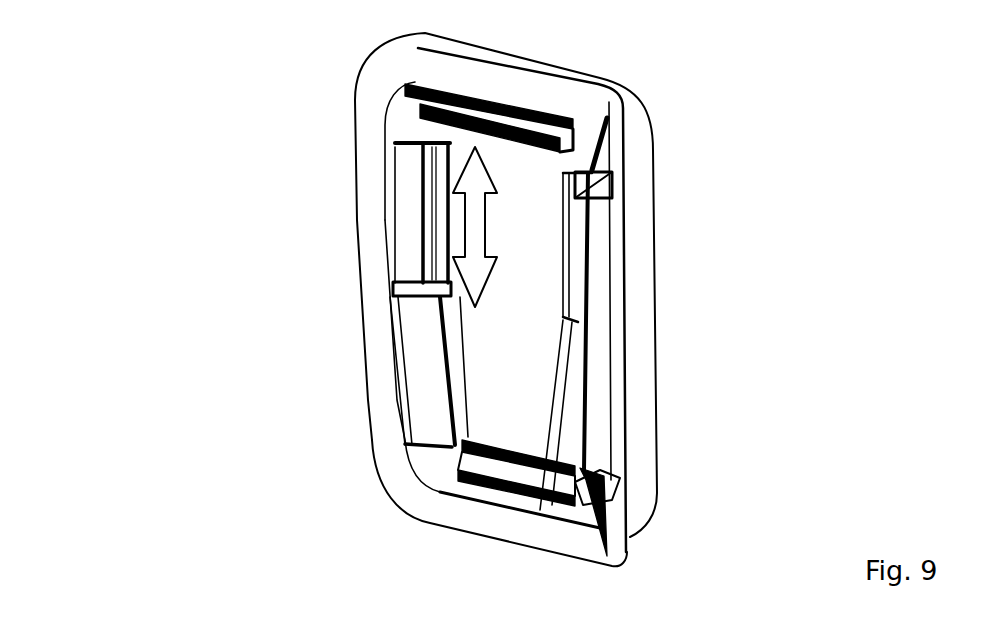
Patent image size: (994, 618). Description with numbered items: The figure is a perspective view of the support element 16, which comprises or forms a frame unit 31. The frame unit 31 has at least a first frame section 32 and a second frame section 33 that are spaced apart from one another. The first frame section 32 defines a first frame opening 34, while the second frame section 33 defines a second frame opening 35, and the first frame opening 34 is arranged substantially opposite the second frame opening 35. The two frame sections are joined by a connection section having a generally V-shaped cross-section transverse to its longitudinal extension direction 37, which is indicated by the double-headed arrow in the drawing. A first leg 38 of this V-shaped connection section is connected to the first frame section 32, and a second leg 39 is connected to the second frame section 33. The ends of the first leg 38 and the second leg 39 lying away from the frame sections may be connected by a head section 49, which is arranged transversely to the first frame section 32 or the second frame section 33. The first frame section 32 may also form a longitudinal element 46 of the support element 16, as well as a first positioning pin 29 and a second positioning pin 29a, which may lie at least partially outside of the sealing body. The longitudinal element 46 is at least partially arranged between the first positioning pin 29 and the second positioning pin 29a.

The support element 16 is at (118, 63).
The frame unit 31 is at (118, 312).
The second leg 39 is at (410, 128).
The first leg 38 is at (416, 178).
The head section 49 is at (442, 215).
The first frame section 32 is at (367, 263).
The second frame section 33 is at (410, 443).
The second frame opening 35 is at (413, 93).
The first frame opening 34 is at (398, 114).
The longitudinal extension direction 37 is at (472, 210).
The first positioning pin 29 is at (608, 188).
The longitudinal element 46 is at (595, 314).
The second positioning pin 29a is at (590, 490).